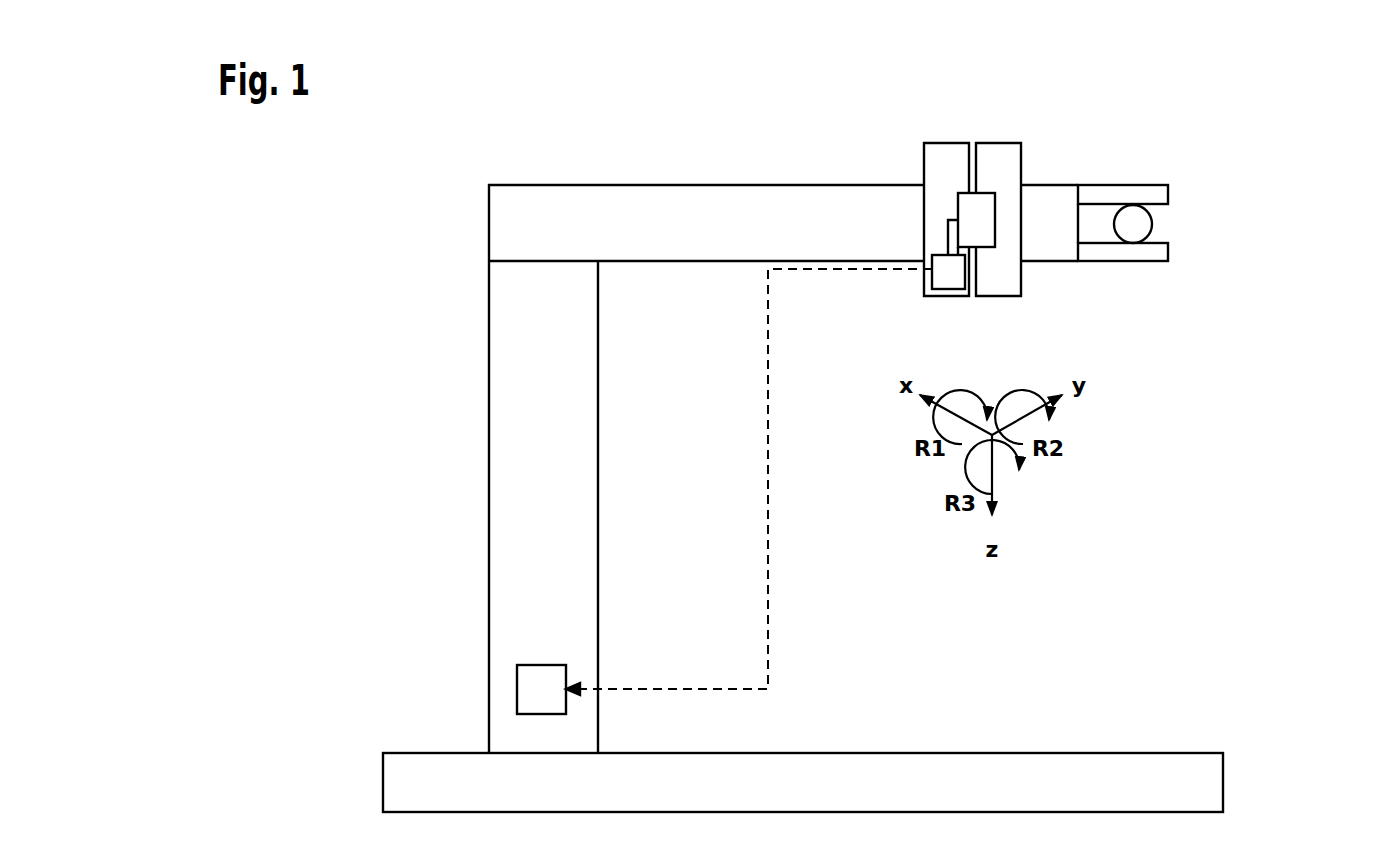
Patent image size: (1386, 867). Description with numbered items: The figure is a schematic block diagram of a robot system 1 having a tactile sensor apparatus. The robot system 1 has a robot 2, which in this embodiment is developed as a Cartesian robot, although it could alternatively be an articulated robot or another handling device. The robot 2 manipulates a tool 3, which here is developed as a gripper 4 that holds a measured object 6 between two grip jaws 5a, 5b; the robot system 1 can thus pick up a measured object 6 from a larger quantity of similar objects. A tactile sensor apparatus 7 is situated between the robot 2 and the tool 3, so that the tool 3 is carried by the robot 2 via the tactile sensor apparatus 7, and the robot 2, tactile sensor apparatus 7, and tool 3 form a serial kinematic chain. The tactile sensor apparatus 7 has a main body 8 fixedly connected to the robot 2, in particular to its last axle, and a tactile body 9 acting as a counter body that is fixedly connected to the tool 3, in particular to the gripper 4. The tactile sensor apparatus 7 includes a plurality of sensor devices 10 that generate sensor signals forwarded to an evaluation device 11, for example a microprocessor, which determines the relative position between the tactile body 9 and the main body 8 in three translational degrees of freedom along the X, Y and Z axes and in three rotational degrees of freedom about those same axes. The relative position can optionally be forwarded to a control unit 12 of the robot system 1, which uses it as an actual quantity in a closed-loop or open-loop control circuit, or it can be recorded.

The robot system 1 is at (1319, 186).
The robot 2 is at (502, 458).
The tool 3 is at (1050, 266).
The gripper 4 is at (1050, 255).
The grip jaw 5a is at (1157, 193).
The grip jaw 5b is at (1157, 253).
The measured object 6 is at (1138, 223).
The tactile sensor apparatus 7 is at (972, 219).
The main body 8 is at (940, 155).
The tactile body 9 is at (1007, 155).
The sensor device 10 is at (984, 224).
The evaluation device 11 is at (942, 278).
The control unit 12 is at (527, 693).